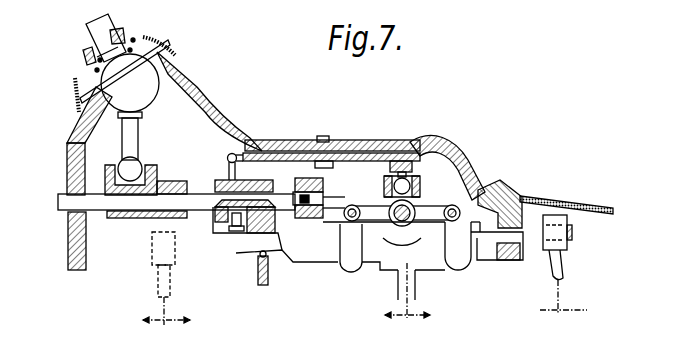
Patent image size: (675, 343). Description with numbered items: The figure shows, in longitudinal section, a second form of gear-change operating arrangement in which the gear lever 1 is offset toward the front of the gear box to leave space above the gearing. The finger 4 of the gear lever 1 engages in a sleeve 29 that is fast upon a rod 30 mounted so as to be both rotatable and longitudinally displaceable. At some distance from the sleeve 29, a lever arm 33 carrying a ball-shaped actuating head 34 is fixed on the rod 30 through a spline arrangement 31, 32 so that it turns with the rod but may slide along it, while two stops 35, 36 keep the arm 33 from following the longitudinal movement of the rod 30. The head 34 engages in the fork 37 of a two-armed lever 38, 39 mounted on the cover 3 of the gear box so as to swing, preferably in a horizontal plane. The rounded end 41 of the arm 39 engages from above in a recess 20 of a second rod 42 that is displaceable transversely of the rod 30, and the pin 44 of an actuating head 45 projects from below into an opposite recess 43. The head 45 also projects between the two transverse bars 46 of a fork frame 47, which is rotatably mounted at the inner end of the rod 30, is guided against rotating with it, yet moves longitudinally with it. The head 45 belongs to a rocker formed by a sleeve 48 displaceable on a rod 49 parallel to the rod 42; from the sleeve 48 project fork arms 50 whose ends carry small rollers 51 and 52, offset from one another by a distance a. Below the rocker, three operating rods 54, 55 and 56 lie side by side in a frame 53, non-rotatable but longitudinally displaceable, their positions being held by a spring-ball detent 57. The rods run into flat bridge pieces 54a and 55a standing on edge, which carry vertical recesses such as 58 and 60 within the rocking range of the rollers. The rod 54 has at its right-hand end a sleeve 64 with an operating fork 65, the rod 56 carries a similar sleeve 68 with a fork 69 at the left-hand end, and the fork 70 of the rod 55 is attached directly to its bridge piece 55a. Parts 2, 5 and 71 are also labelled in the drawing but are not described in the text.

The gear lever 1 is at (100, 28).
The pivoted head plate 2 is at (140, 70).
The cover 3 is at (170, 62).
The finger 4 is at (136, 135).
The frame wall 5 is at (67, 171).
The recess 20 is at (422, 157).
The sleeve 29 is at (154, 183).
The rod 30 is at (60, 207).
The spline arrangement 31 is at (228, 235).
The spline arrangement 32 is at (222, 228).
The lever arm 33 is at (227, 158).
The ball-shaped actuating head 34 is at (237, 156).
The stop 35 is at (217, 182).
The stop 36 is at (262, 178).
The fork 37 is at (222, 153).
The two-armed lever 38 is at (252, 151).
The two-armed lever 39 is at (326, 140).
The rounded end 41 is at (410, 168).
The second rod 42 is at (415, 167).
The recess 43 is at (410, 177).
The pin 44 is at (394, 160).
The actuating head 45 is at (413, 173).
The transverse bars 46 is at (361, 168).
The fork frame 47 is at (330, 200).
The sleeve 48 is at (402, 213).
The rod 49 is at (402, 213).
The fork arm 50 is at (430, 209).
The roller 51 is at (351, 273).
The roller 52 is at (490, 198).
The frame 53 is at (279, 274).
The operating rod 54 is at (572, 233).
The bridge piece 54a is at (376, 270).
The operating rod 55 is at (498, 251).
The bridge piece 55a is at (464, 268).
The operating rod 56 is at (313, 141).
The spring-ball detent 57 is at (260, 263).
The vertical recess 58 is at (340, 273).
The vertical recess 60 is at (457, 268).
The sleeve 64 is at (557, 222).
The operating fork 65 is at (562, 268).
The sleeve 68 is at (150, 257).
The fork 69 is at (158, 284).
The fork 70 is at (412, 292).
The frame column 71 is at (69, 252).